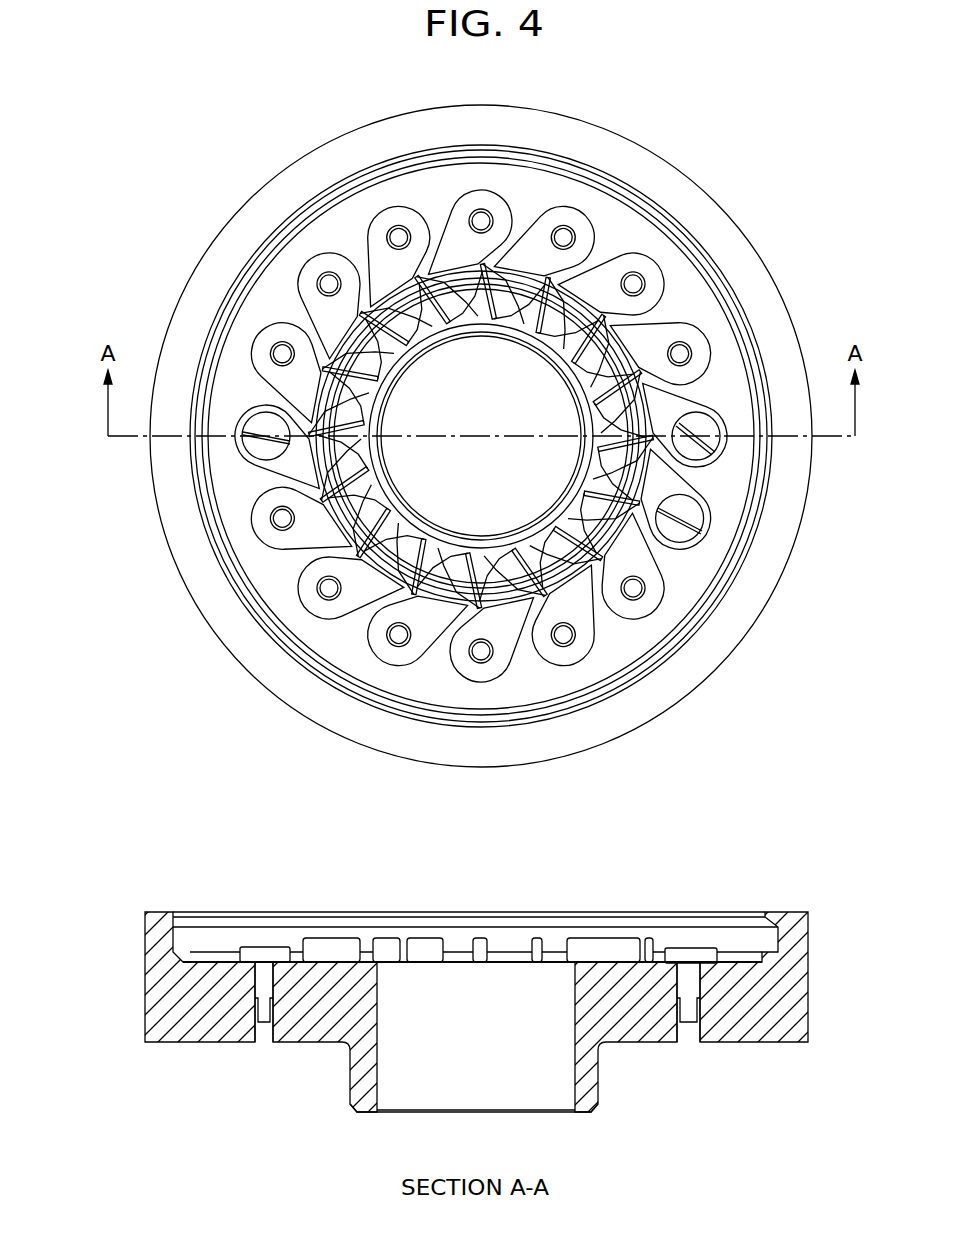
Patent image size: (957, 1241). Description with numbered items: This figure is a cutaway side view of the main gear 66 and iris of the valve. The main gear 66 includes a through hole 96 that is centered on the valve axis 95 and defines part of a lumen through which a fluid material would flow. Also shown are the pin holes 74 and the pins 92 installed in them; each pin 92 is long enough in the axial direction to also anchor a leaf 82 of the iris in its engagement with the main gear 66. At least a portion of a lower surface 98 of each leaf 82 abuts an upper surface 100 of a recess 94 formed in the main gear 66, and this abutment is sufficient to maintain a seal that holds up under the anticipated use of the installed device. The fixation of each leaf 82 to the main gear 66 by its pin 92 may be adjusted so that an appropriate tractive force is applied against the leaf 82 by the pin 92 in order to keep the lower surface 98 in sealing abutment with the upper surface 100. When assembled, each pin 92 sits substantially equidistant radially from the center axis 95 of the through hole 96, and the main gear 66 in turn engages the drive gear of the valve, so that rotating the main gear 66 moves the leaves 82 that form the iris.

The main gear 66 is at (507, 1041).
The pin hole 74 is at (700, 1044).
The leaf 82 is at (424, 944).
The pin 92 is at (263, 983).
The recess 94 is at (173, 955).
The valve axis 95 is at (498, 1113).
The through hole 96 is at (470, 1047).
The lower surface 98 is at (394, 966).
The upper surface 100 is at (612, 966).